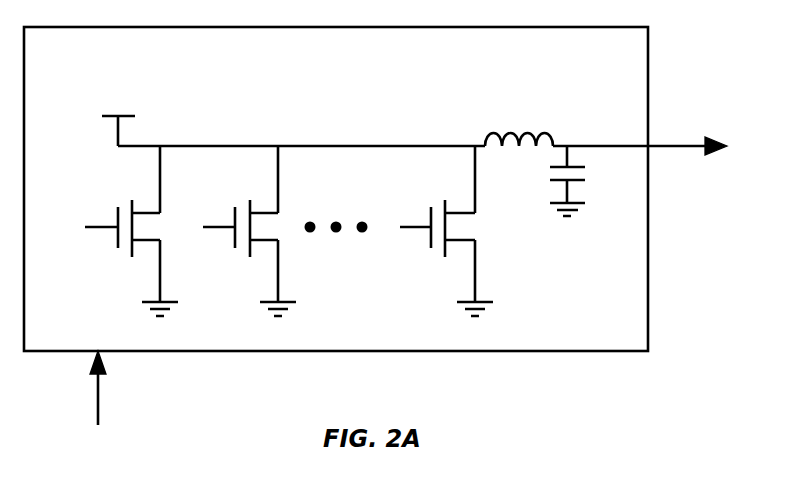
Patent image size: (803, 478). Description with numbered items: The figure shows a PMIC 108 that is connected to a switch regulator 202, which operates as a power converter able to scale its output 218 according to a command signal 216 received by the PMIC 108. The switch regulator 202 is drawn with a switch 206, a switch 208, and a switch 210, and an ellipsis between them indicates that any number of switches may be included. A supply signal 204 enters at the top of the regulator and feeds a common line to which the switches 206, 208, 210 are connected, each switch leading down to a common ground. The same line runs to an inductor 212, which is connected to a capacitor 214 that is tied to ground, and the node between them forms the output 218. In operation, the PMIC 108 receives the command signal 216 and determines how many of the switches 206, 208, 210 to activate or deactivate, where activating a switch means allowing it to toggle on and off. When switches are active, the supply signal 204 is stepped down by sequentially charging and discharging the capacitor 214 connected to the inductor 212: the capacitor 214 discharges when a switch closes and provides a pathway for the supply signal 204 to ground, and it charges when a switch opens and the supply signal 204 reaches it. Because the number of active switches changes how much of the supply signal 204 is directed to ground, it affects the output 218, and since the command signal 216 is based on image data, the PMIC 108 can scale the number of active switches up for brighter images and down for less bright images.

The PMIC 108 is at (573, 88).
The switch regulator 202 is at (168, 104).
The supply signal 204 is at (100, 117).
The switch 206 is at (117, 208).
The switch 208 is at (234, 207).
The switch 210 is at (430, 207).
The inductor 212 is at (522, 150).
The capacitor 214 is at (587, 180).
The command signal 216 is at (100, 391).
The output 218 is at (682, 148).